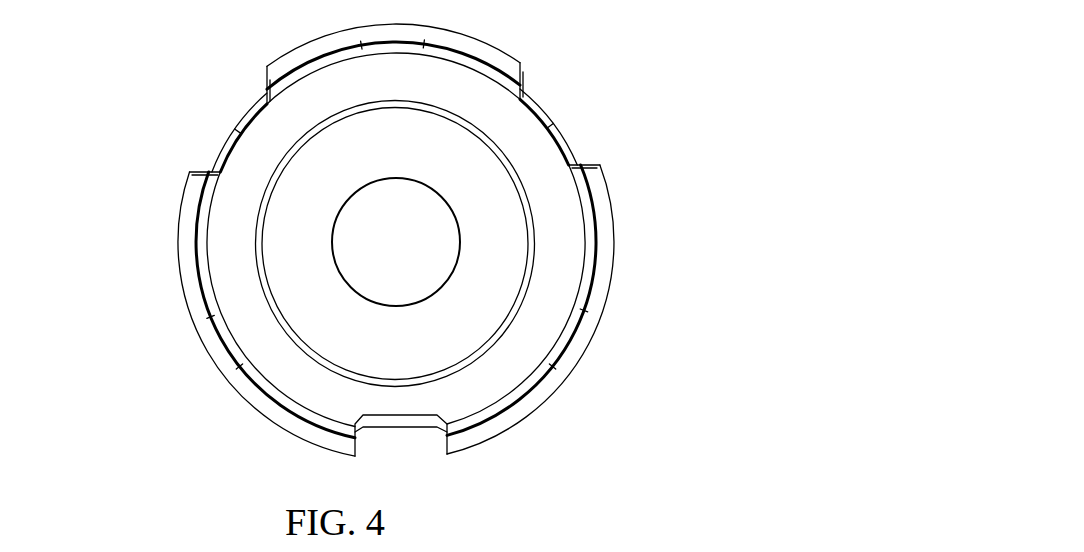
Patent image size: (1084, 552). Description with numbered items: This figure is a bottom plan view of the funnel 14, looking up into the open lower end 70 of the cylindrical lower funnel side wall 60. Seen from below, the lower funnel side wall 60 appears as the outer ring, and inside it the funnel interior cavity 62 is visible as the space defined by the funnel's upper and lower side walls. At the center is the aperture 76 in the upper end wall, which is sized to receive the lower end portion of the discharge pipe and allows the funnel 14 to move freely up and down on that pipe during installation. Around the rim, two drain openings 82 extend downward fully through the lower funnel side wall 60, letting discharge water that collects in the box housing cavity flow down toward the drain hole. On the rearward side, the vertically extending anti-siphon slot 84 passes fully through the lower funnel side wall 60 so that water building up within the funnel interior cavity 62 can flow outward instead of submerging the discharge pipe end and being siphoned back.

The funnel 14 is at (725, 75).
The lower funnel side wall 60 is at (587, 350).
The funnel interior cavity 62 is at (555, 265).
The lower end 70 is at (537, 395).
The aperture 76 is at (413, 242).
The drain openings 82 is at (238, 103).
The anti-siphon slot 84 is at (402, 437).